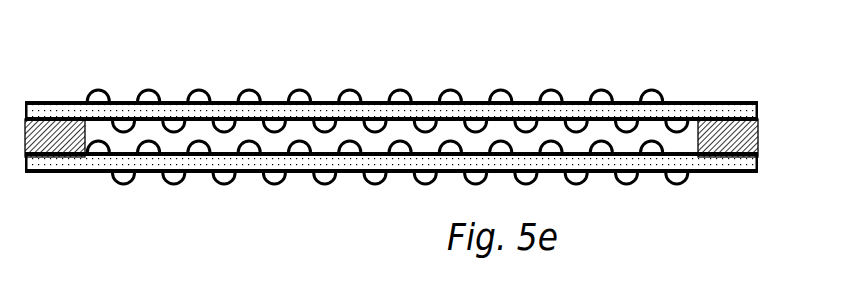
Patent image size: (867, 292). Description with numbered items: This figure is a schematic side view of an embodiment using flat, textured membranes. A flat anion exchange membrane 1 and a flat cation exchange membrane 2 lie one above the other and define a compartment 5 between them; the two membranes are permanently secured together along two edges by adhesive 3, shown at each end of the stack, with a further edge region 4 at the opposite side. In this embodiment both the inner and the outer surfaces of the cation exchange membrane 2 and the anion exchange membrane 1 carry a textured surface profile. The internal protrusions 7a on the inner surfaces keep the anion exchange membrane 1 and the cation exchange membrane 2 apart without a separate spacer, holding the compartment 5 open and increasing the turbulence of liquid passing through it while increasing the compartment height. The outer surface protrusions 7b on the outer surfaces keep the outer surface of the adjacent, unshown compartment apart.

The anion exchange membrane 1 is at (215, 118).
The cation exchange membrane 2 is at (127, 158).
The adhesive 3 is at (748, 130).
The left edge sealing portion 4 is at (32, 143).
The compartment 5 is at (563, 133).
The internal protrusions 7a is at (677, 133).
The outer surface protrusions 7b is at (105, 95).